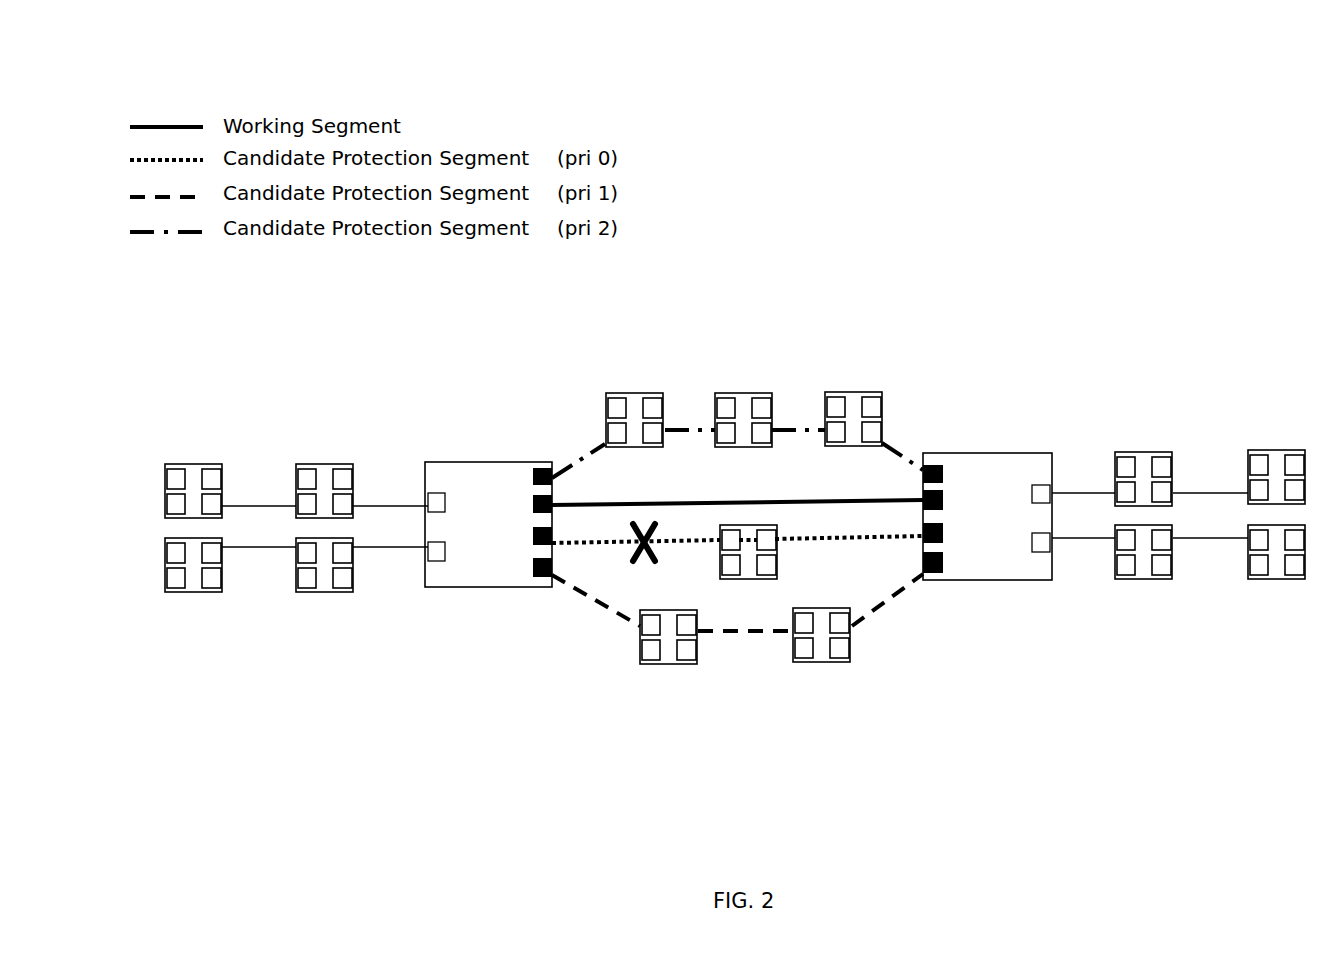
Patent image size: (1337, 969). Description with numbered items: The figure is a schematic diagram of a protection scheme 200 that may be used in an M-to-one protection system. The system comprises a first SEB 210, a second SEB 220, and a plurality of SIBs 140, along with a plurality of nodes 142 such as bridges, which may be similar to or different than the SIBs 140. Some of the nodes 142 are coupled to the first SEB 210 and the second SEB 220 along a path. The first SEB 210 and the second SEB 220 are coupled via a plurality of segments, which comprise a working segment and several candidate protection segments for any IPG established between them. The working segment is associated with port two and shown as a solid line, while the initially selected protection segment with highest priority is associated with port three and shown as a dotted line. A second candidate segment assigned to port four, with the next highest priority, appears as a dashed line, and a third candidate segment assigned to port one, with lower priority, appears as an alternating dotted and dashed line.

The protection scheme 200 is at (1079, 97).
The nodes 142 is at (165, 466).
The SIBs 140 is at (720, 579).
The first SEB 210 is at (455, 588).
The second SEB 220 is at (1012, 578).